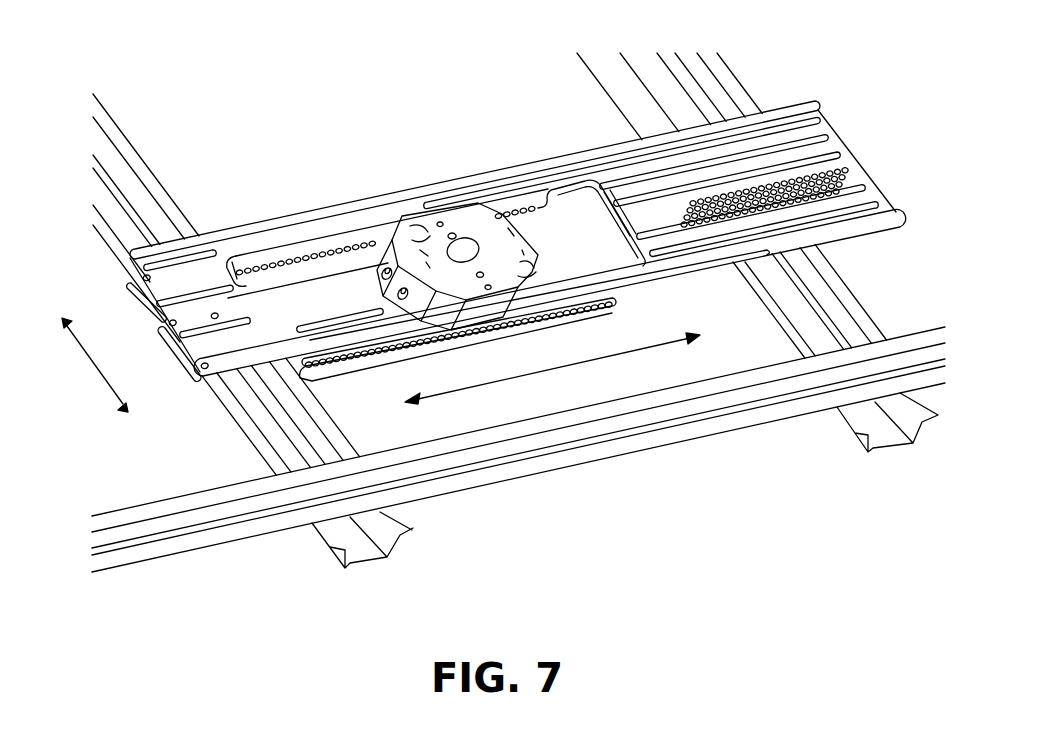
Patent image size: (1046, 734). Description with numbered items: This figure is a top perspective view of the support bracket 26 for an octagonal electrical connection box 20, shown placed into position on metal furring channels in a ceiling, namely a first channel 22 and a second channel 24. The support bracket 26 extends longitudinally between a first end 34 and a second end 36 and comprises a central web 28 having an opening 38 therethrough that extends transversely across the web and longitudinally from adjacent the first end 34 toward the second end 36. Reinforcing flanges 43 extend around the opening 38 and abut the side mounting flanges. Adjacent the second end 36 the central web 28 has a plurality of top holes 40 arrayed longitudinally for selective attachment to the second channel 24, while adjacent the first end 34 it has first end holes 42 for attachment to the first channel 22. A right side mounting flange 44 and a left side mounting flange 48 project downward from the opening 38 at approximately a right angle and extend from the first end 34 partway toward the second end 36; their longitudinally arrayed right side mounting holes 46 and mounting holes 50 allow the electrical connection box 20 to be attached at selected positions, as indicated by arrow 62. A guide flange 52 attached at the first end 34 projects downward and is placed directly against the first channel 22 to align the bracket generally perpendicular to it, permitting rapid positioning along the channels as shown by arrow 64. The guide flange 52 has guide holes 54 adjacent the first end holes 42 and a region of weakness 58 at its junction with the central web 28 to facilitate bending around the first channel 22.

The electrical connection box 20 is at (455, 211).
The first channel 22 is at (118, 160).
The second channel 24 is at (620, 68).
The support bracket 26 is at (384, 103).
The central web 28 is at (207, 262).
The first end 34 is at (192, 378).
The second end 36 is at (840, 135).
The opening 38 is at (568, 216).
The top holes 40 is at (800, 168).
The first end hole 42 is at (162, 306).
The reinforcing flanges 43 is at (238, 270).
The right side mounting flange 44 is at (605, 300).
The right side mounting holes 46 is at (428, 342).
The left side mounting flange 48 is at (307, 258).
The mounting holes 50 is at (362, 242).
The guide flange 52 is at (178, 352).
The guide hole 54 is at (166, 326).
The region of weakness 58 is at (128, 283).
The arrow 62 is at (573, 362).
The arrow 64 is at (95, 360).